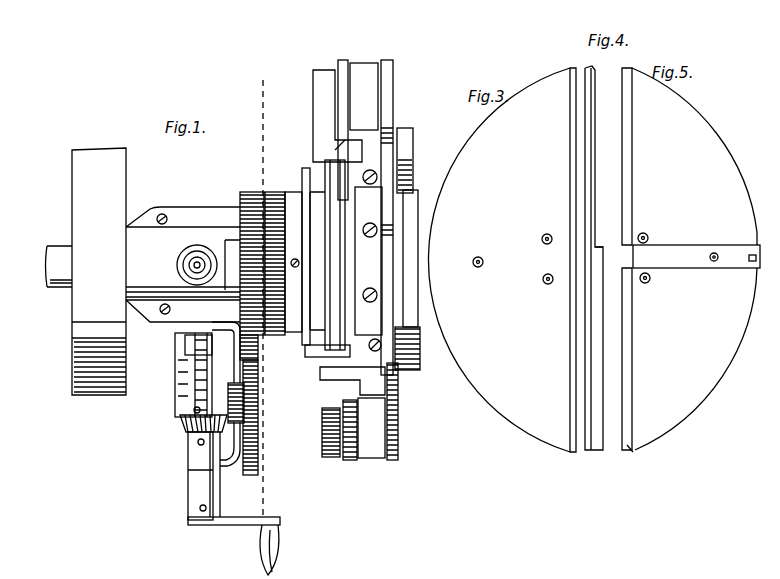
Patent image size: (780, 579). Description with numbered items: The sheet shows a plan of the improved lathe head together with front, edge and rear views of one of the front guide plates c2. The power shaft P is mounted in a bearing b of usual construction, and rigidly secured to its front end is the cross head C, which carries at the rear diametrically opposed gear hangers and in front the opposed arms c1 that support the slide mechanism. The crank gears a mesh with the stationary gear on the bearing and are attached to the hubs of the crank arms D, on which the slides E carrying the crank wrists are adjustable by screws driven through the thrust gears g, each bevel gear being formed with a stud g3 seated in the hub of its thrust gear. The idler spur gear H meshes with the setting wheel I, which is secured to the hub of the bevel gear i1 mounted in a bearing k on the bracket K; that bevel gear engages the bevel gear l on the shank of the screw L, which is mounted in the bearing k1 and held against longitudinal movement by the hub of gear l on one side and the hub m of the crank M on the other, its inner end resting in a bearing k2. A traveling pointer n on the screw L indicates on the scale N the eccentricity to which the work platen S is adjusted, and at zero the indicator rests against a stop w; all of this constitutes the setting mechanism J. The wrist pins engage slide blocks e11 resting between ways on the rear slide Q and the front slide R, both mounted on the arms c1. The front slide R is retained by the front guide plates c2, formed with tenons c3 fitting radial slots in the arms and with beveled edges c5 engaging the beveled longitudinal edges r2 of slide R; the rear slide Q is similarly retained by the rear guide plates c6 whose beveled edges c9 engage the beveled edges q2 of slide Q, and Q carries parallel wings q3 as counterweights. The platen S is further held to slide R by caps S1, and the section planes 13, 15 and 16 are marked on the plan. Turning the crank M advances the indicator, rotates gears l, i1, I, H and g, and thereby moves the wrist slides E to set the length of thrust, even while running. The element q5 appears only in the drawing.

In FIG. 1, the power shaft P is at (58, 268).
In FIG. 1, the bearing b is at (183, 264).
In FIG. 1, the spur gear H is at (238, 196).
In FIG. 1, the section line 15— 15 is at (197, 206).
In FIG. 1, the section line 16— 16 is at (269, 288).
In FIG. 1, the thrust gear g is at (252, 190).
In FIG. 1, the crank gear a is at (276, 190).
In FIG. 1, the setting wheel I is at (262, 415).
In FIG. 1, the cross head C is at (294, 252).
In FIG. 1, the crank arm D is at (306, 216).
In FIG. 1, the slide E is at (327, 258).
In FIG. 1, the slide block e11 is at (340, 185).
In FIG. 1, the rear slide Q is at (364, 173).
In FIG. 1, the parallel wing q3 is at (332, 107).
In FIG. 1, the rear guide plate c6 is at (344, 60).
In FIG. 1, the arm c1 is at (367, 260).
In FIG. 1, the front guide plate c2 is at (394, 75).
In FIG. 3, the front guide plate c2 is at (502, 260).
In FIG. 4, the front guide plate c2 is at (598, 258).
In FIG. 5, the front guide plate c2 is at (689, 259).
In FIG. 1, the beveled edge c9 is at (345, 138).
In FIG. 1, the beveled longitudinal edge q2 is at (426, 405).
In FIG. 1, the pinion q5 is at (319, 432).
In FIG. 1, the front slide R is at (370, 261).
In FIG. 1, the stud g3 is at (367, 257).
In FIG. 1, the beveled edge c5 is at (390, 318).
In FIG. 5, the beveled edge c5 is at (628, 446).
In FIG. 1, the work platen S is at (410, 165).
In FIG. 1, the cap S1 is at (412, 245).
In FIG. 1, the beveled longitudinal edge r2 is at (402, 196).
In FIG. 1, the scale N is at (190, 358).
In FIG. 1, the traveling pointer n is at (168, 340).
In FIG. 1, the bearing k2 is at (190, 330).
In FIG. 1, the section line 13— 13 is at (190, 372).
In FIG. 1, the screw L is at (194, 385).
In FIG. 1, the bevel gear i1 is at (180, 398).
In FIG. 1, the stop w is at (192, 410).
In FIG. 1, the bevel gear l is at (185, 425).
In FIG. 1, the setting mechanism J is at (158, 444).
In FIG. 1, the bearing k1 is at (196, 476).
In FIG. 1, the bracket K is at (222, 466).
In FIG. 1, the bearing k is at (236, 403).
In FIG. 1, the hub m is at (203, 525).
In FIG. 1, the crank M is at (262, 532).
In FIG. 4, the tenon c3 is at (598, 246).
In FIG. 5, the tenon c3 is at (696, 256).